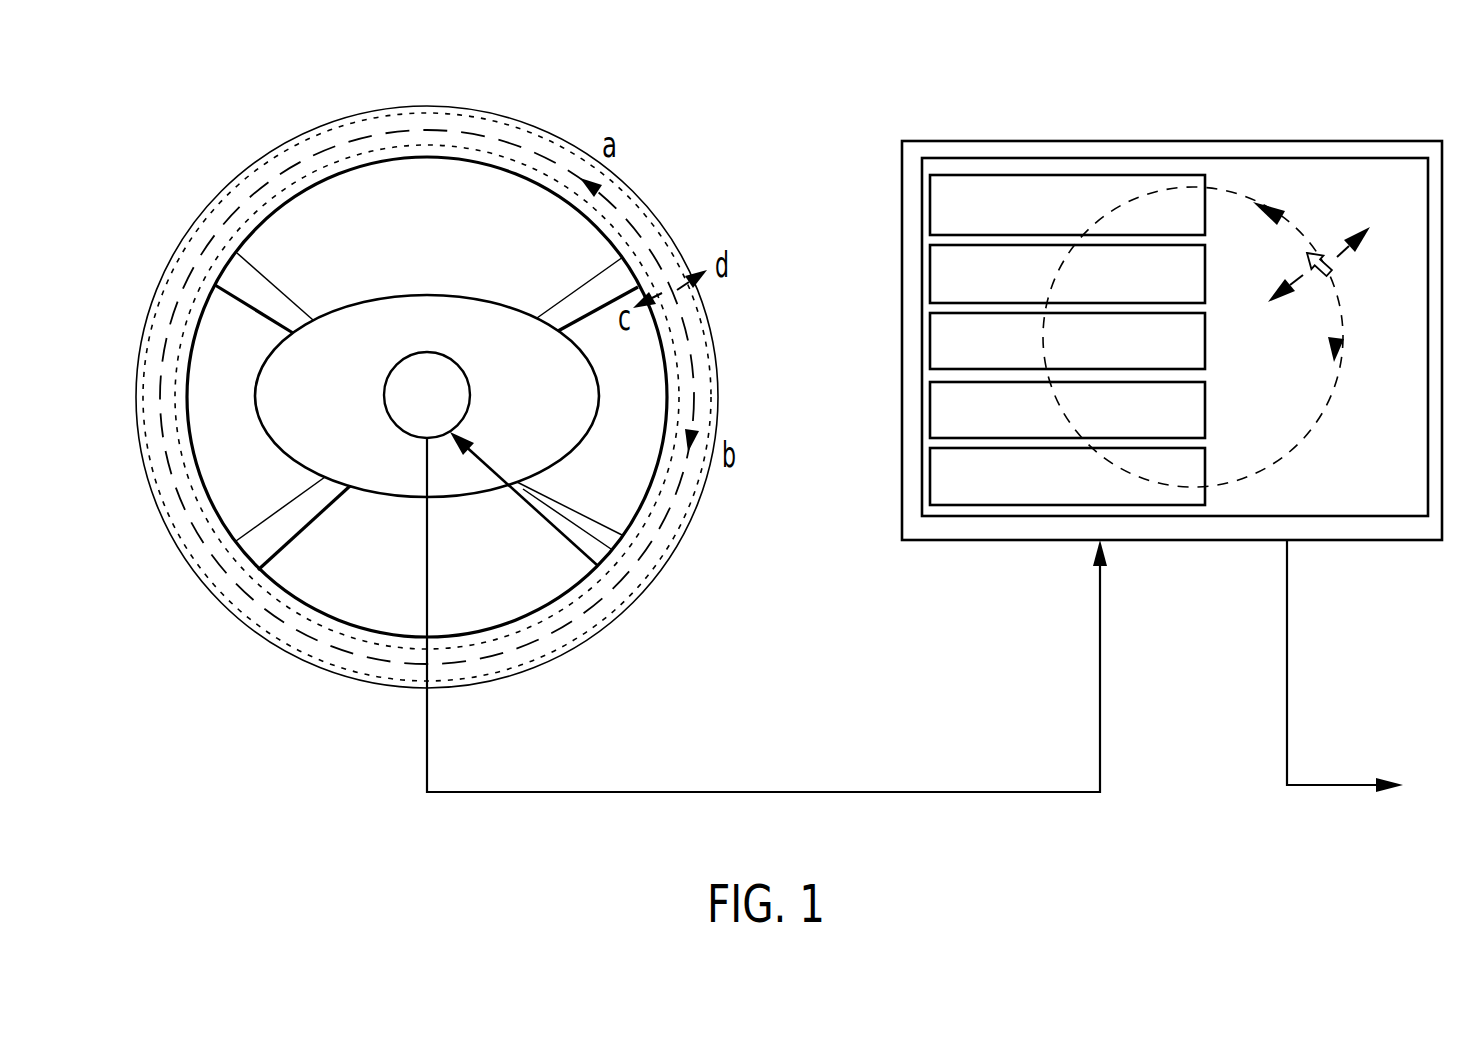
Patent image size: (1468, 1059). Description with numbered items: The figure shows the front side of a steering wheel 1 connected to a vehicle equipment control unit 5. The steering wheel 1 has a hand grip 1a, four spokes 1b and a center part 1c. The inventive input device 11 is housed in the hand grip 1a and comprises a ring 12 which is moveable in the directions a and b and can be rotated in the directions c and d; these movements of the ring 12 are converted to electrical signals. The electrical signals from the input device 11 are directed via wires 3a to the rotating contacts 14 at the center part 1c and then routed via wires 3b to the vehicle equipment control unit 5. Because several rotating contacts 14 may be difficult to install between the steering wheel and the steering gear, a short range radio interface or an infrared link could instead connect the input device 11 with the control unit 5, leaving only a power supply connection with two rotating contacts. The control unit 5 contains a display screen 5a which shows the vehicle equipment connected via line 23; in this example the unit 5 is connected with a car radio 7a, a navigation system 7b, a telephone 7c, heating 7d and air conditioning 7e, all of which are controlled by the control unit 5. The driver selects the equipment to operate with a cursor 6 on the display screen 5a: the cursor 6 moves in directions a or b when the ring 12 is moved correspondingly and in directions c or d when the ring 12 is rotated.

The steering wheel 1 is at (250, 112).
The hand grip 1a is at (607, 622).
The spokes 1b is at (560, 537).
The center part 1c is at (368, 301).
The wires 3a is at (577, 520).
The wires 3b is at (552, 793).
The vehicle equipment control unit 5 is at (1125, 141).
The display screen 5a is at (1315, 158).
The cursor 6 is at (1330, 274).
The car radio 7a is at (922, 208).
The navigation system 7b is at (922, 275).
The telephone 7c is at (922, 342).
The heating 7d is at (922, 409).
The air conditioning 7e is at (922, 476).
The input device 11 is at (537, 145).
The ring 12 is at (652, 223).
The rotating contacts 14 is at (468, 377).
The line 23 is at (1288, 707).